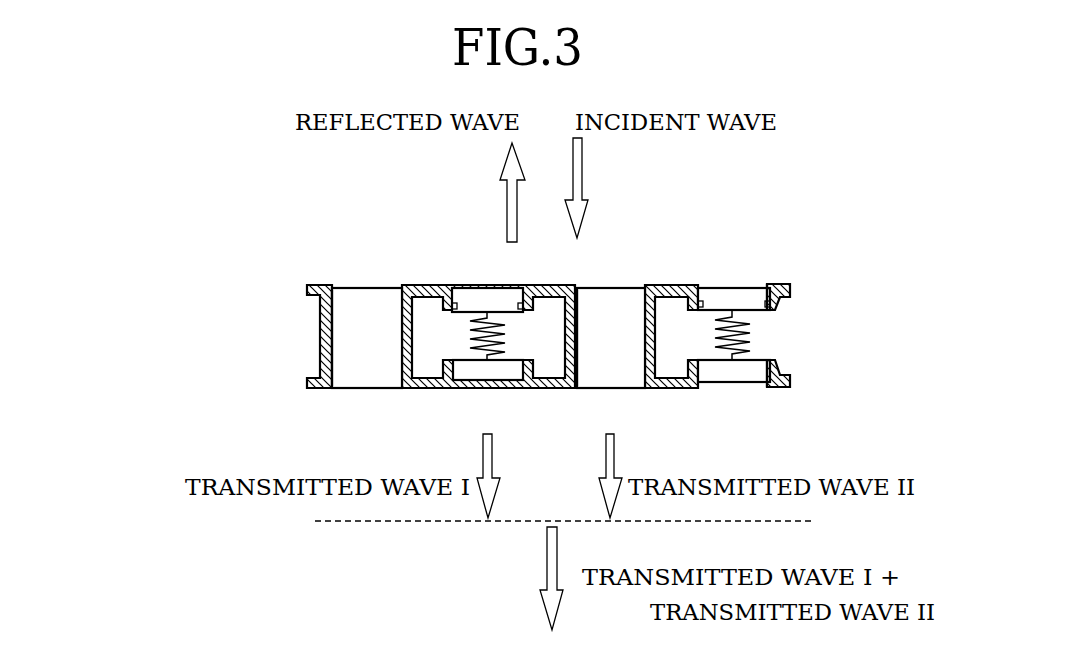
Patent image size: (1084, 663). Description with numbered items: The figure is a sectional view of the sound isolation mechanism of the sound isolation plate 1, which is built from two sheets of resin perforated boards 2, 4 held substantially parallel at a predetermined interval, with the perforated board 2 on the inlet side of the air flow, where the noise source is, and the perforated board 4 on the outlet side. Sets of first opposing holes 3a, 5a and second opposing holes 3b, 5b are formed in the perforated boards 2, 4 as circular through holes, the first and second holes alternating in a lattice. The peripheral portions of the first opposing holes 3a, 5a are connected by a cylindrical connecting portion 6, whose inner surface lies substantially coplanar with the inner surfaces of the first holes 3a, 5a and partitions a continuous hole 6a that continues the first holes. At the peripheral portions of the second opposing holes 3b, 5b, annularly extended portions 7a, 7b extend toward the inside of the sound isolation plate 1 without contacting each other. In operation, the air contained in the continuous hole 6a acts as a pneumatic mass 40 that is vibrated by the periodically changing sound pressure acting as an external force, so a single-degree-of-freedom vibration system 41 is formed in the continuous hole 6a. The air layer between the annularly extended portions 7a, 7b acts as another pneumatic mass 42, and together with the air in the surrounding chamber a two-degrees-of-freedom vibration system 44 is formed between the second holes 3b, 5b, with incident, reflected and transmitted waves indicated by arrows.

The sound isolation plate 1 is at (794, 266).
The perforated board 2 is at (790, 289).
The perforated board 4 is at (790, 381).
The first hole 3a is at (328, 287).
The second hole 3b is at (448, 286).
The pneumatic mass 40 is at (362, 389).
The single-degree-of-freedom vibration system 41 is at (364, 281).
The pneumatic mass 42 is at (522, 285).
The two-degrees-of-freedom vibration system 44 is at (471, 280).
The first hole 5a is at (328, 388).
The second hole 5b is at (454, 382).
The cylindrical connecting portion 6 is at (320, 340).
The continuous hole 6a is at (330, 311).
The annularly extended portion 7a is at (418, 287).
The annularly extended portion 7b is at (433, 381).